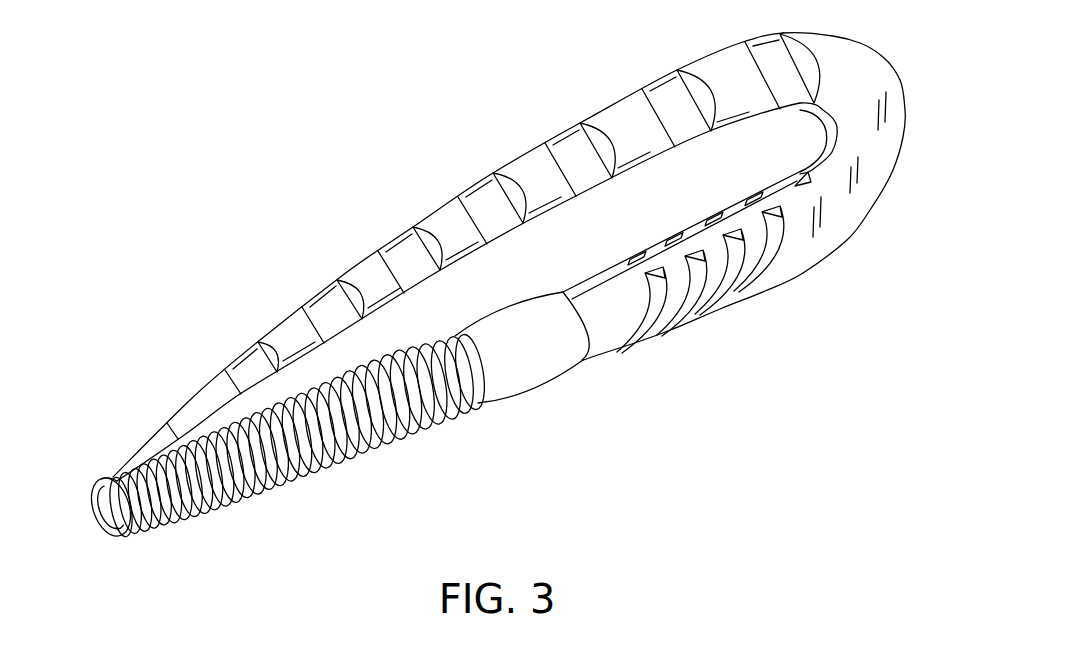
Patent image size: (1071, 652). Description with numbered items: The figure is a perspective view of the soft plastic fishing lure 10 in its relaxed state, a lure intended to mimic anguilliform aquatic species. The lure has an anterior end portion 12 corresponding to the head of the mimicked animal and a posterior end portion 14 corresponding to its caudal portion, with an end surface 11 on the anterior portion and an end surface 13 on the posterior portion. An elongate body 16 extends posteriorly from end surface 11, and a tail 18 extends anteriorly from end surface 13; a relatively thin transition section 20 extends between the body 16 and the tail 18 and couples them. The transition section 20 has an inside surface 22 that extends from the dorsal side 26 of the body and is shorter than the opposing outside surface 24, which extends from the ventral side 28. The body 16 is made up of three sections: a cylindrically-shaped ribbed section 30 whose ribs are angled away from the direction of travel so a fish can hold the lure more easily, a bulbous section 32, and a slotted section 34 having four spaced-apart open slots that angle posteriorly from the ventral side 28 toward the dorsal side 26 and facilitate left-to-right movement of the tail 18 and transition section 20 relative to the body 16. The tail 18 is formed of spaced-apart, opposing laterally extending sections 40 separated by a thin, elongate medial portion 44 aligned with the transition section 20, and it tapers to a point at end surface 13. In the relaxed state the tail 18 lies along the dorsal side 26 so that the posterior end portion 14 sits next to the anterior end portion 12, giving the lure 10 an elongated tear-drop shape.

The fishing lure 10 is at (243, 143).
The end surface 11 is at (107, 512).
The anterior end portion 12 is at (145, 538).
The end surface 13 is at (118, 476).
The posterior end portion 14 is at (120, 442).
The elongate body 16 is at (449, 443).
The tail 18 is at (400, 195).
The transition section 20 is at (892, 187).
The inside surface 22 is at (820, 142).
The outside surface 24 is at (903, 128).
The dorsal side 26 is at (605, 277).
The ventral side 28 is at (603, 357).
The ribbed section 30 is at (300, 468).
The bulbous section 32 is at (528, 350).
The slotted section 34 is at (713, 318).
The laterally extending sections 40 is at (360, 277).
The medial portion 44 is at (247, 370).